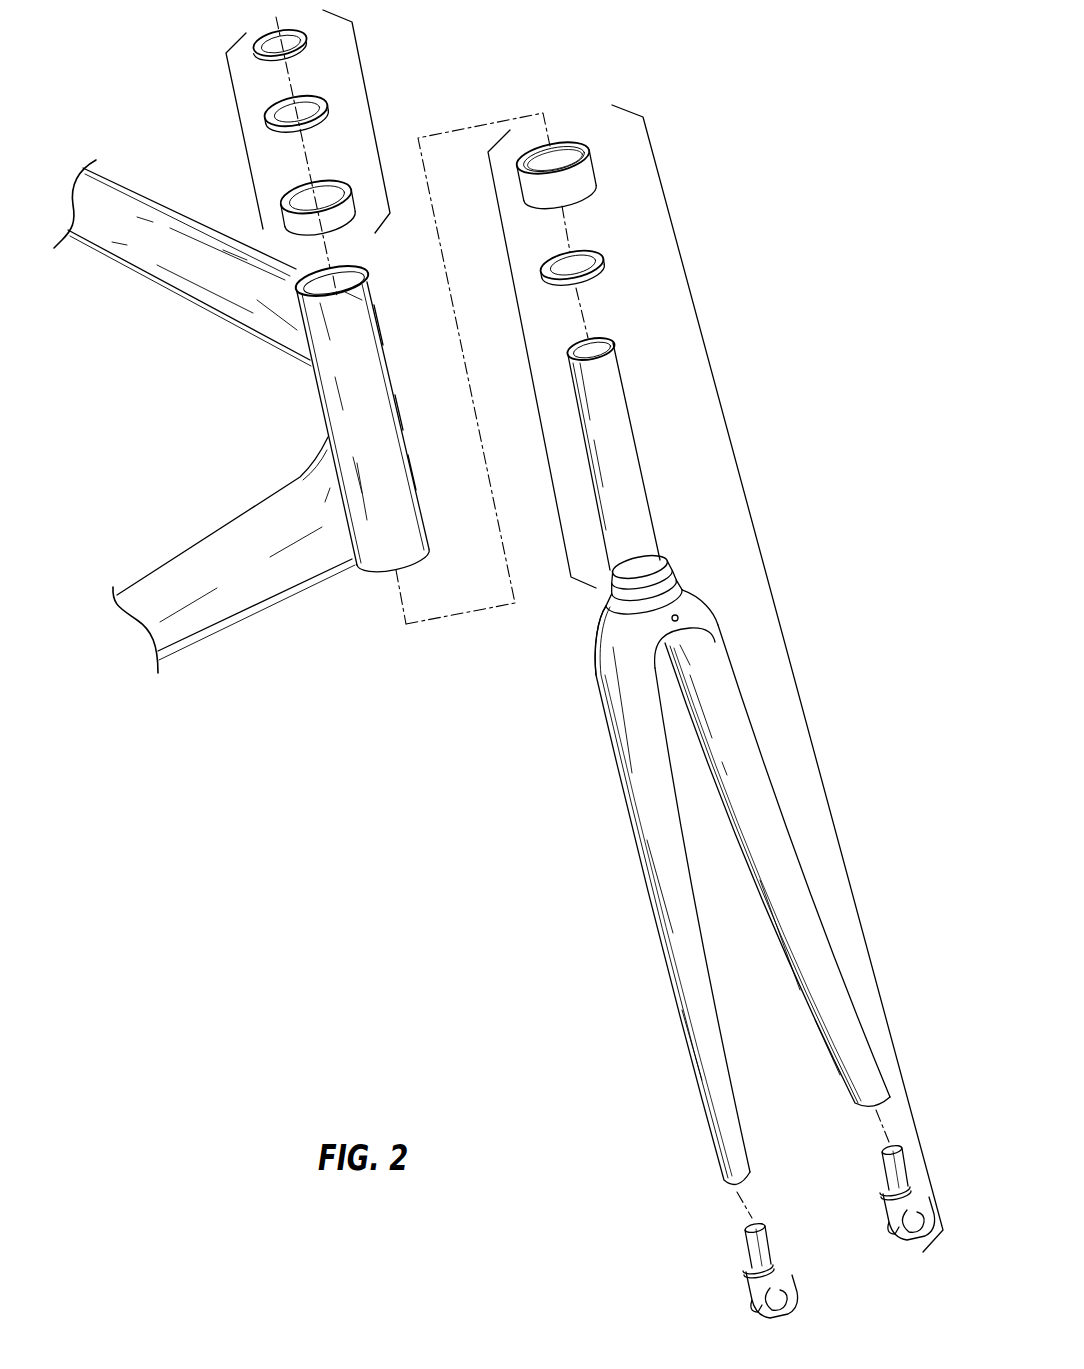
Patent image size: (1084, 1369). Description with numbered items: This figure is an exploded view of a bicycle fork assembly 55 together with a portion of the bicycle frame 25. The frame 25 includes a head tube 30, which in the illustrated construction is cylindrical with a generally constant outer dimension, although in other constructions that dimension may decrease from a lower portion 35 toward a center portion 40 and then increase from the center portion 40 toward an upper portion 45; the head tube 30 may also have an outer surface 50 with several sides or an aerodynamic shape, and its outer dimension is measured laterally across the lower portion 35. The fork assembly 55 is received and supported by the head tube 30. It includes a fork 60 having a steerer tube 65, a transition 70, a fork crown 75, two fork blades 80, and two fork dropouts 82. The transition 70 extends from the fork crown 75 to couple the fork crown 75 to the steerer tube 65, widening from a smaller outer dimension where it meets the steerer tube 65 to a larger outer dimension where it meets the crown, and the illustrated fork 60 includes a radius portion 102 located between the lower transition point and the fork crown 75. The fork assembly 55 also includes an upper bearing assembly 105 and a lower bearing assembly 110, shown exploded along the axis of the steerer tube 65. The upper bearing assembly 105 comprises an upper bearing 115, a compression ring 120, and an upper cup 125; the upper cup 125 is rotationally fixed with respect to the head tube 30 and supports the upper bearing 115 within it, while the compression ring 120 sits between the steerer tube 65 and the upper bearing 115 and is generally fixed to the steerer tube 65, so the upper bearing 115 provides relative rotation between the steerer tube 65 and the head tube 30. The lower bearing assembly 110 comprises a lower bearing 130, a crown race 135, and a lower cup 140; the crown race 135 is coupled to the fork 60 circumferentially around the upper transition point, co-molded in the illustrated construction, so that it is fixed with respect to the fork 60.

The frame 25 is at (178, 290).
The head tube 30 is at (357, 568).
The lower portion 35 is at (412, 467).
The center portion 40 is at (403, 410).
The upper portion 45 is at (382, 322).
The outer surface 50 is at (355, 303).
The fork assembly 55 is at (373, 118).
The fork 60 is at (608, 740).
The steerer tube 65 is at (633, 412).
The transition 70 is at (673, 577).
The fork crown 75 is at (595, 632).
The fork blades 80 is at (743, 863).
The fork dropouts 82 is at (893, 1180).
The radius portion 102 is at (680, 617).
The upper bearing assembly 105 is at (242, 143).
The lower bearing assembly 110 is at (528, 362).
The upper bearing 115 is at (327, 110).
The compression ring 120 is at (268, 32).
The upper cup 125 is at (357, 200).
The lower bearing 130 is at (597, 277).
The crown race 135 is at (667, 557).
The lower cup 140 is at (577, 203).